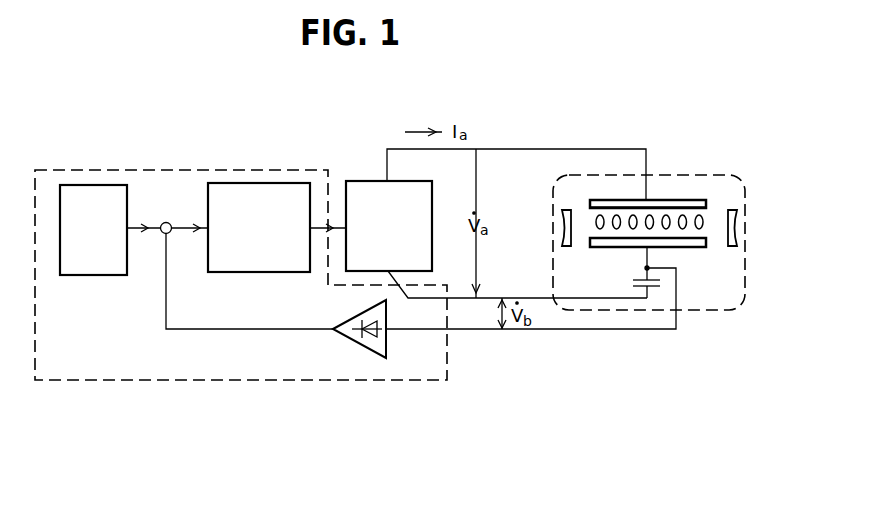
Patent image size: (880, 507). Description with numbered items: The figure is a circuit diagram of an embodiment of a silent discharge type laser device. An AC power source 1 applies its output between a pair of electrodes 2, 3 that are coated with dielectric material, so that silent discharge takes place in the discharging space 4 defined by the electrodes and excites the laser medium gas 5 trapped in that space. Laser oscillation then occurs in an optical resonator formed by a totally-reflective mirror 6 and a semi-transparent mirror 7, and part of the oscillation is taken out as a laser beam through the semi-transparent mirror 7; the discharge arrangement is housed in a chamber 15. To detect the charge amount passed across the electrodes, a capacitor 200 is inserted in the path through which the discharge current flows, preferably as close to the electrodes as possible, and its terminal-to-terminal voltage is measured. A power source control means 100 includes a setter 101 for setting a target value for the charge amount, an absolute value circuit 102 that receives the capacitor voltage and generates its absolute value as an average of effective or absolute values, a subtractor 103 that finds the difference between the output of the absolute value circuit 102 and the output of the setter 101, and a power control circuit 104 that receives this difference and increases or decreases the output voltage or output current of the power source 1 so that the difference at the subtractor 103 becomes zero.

The AC power source 1 is at (371, 181).
The electrode 2 is at (668, 199).
The electrode 3 is at (700, 248).
The discharging space 4 is at (696, 199).
The laser medium gas 5 is at (593, 220).
The totally-reflective mirror 6 is at (560, 228).
The semi-transparent mirror 7 is at (740, 228).
The chamber 15 is at (703, 312).
The power source control means 100 is at (140, 375).
The setter 101 is at (86, 275).
The absolute value circuit 102 is at (338, 332).
The subtractor 103 is at (162, 234).
The power control circuit 104 is at (236, 275).
The capacitor 200 is at (627, 287).